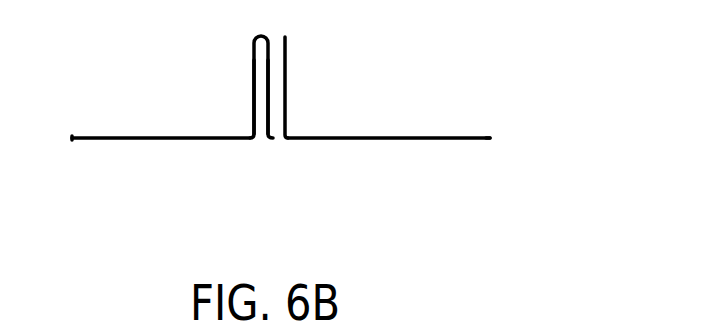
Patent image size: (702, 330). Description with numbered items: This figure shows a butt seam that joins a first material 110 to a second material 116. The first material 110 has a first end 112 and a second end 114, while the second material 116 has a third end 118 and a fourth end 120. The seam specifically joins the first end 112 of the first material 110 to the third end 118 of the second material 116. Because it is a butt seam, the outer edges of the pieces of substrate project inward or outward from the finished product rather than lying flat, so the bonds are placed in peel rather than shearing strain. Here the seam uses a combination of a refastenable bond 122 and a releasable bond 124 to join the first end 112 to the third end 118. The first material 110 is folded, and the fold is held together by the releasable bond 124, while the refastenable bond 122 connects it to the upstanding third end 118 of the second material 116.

The first material 110 is at (158, 137).
The first end 112 is at (265, 138).
The second end 114 is at (72, 139).
The second material 116 is at (398, 137).
The third end 118 is at (285, 38).
The fourth end 120 is at (490, 137).
The refastenable bond 122 is at (275, 138).
The releasable bond 124 is at (260, 138).